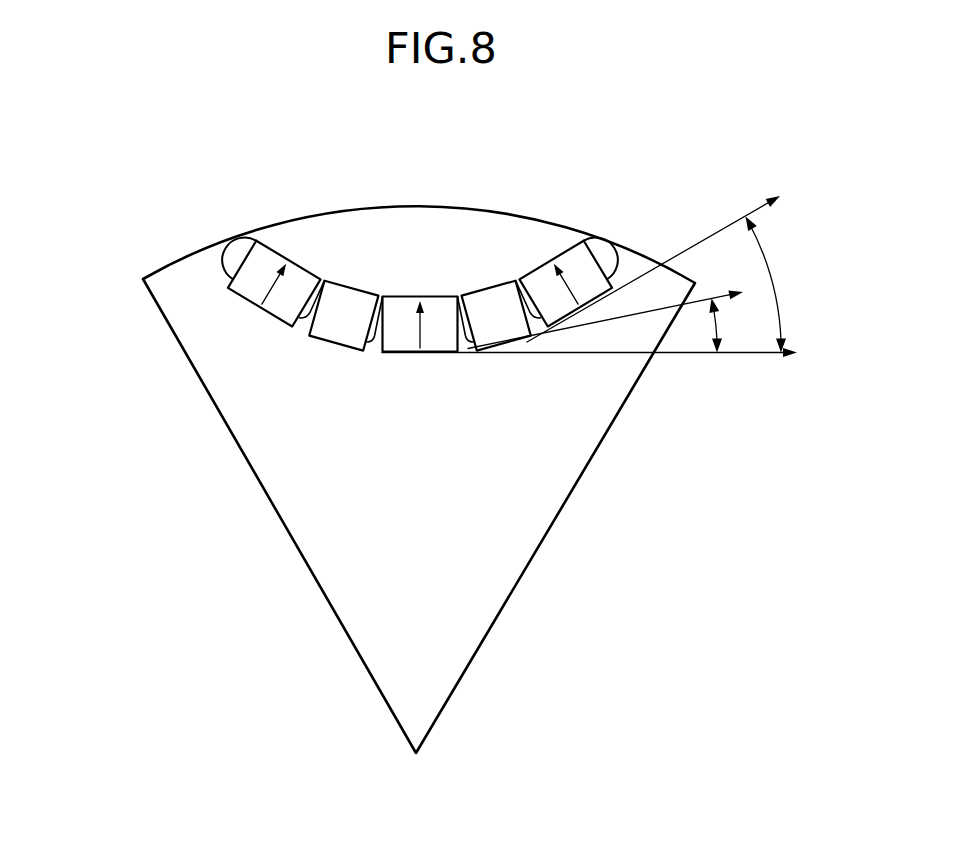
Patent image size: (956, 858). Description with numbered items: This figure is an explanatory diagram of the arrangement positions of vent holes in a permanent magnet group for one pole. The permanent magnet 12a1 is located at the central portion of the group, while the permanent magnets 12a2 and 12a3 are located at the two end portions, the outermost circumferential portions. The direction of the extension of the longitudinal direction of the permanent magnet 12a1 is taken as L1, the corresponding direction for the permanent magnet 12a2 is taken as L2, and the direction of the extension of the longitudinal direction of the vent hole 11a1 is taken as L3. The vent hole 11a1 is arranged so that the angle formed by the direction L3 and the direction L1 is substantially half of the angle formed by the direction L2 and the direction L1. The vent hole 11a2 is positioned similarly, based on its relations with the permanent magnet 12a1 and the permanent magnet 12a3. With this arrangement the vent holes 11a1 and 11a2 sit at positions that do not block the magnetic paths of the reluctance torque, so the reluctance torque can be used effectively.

The permanent magnet 12a1 is at (394, 343).
The permanent magnet 12a2 is at (560, 313).
The permanent magnet 12a3 is at (282, 310).
The vent hole 11a1 is at (500, 334).
The vent hole 11a2 is at (341, 334).
The direction L1 is at (747, 357).
The direction L2 is at (720, 229).
The direction L3 is at (647, 313).